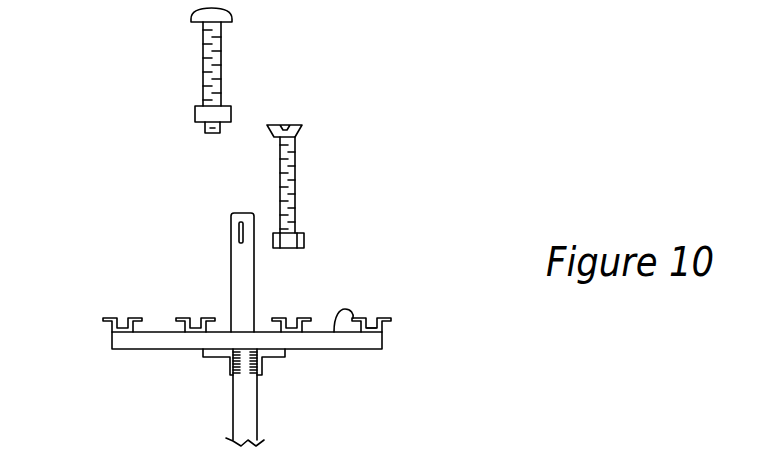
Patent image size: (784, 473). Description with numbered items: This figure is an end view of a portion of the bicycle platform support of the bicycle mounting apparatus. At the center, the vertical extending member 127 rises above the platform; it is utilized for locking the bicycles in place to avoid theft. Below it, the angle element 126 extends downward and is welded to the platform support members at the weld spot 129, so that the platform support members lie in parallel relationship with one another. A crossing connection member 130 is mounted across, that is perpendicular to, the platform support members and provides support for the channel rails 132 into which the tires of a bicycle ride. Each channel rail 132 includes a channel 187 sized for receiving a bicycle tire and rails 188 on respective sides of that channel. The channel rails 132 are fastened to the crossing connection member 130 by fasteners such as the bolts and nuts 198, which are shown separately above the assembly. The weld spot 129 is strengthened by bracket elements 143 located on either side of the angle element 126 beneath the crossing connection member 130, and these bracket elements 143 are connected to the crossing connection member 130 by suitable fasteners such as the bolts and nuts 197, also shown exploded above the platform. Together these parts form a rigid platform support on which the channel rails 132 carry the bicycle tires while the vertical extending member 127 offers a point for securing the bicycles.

The bolts and nuts 197 is at (203, 42).
The bolts and nuts 198 is at (296, 156).
The vertical extending member 127 is at (224, 213).
The crossing connection members 130 is at (373, 340).
The channel rails 132 is at (103, 317).
The channel 187 is at (370, 317).
The rails 188 is at (393, 320).
The bracket elements 143 is at (228, 359).
The weld spot 129 is at (248, 371).
The angle element 126 is at (240, 418).